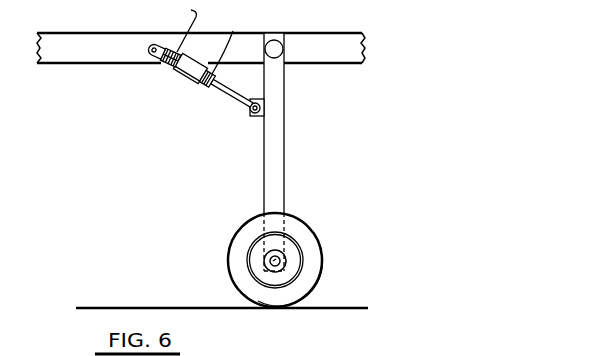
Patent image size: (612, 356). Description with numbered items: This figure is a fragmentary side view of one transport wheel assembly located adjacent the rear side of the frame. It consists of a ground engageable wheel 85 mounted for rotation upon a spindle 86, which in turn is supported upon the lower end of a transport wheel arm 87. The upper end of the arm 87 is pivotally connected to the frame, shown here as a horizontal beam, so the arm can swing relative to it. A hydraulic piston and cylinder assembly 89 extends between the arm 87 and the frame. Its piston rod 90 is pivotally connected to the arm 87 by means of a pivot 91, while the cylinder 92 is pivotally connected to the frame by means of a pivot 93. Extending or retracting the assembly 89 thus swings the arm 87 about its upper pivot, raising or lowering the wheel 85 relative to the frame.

The ground engageable wheel 85 is at (244, 235).
The spindle 86 is at (270, 263).
The transport wheel arm 87 is at (265, 186).
The hydraulic piston and cylinder assembly 89 is at (159, 79).
The piston rod 90 is at (231, 97).
The pivot 91 is at (251, 116).
The cylinder 92 is at (163, 70).
The pivot 93 is at (148, 51).